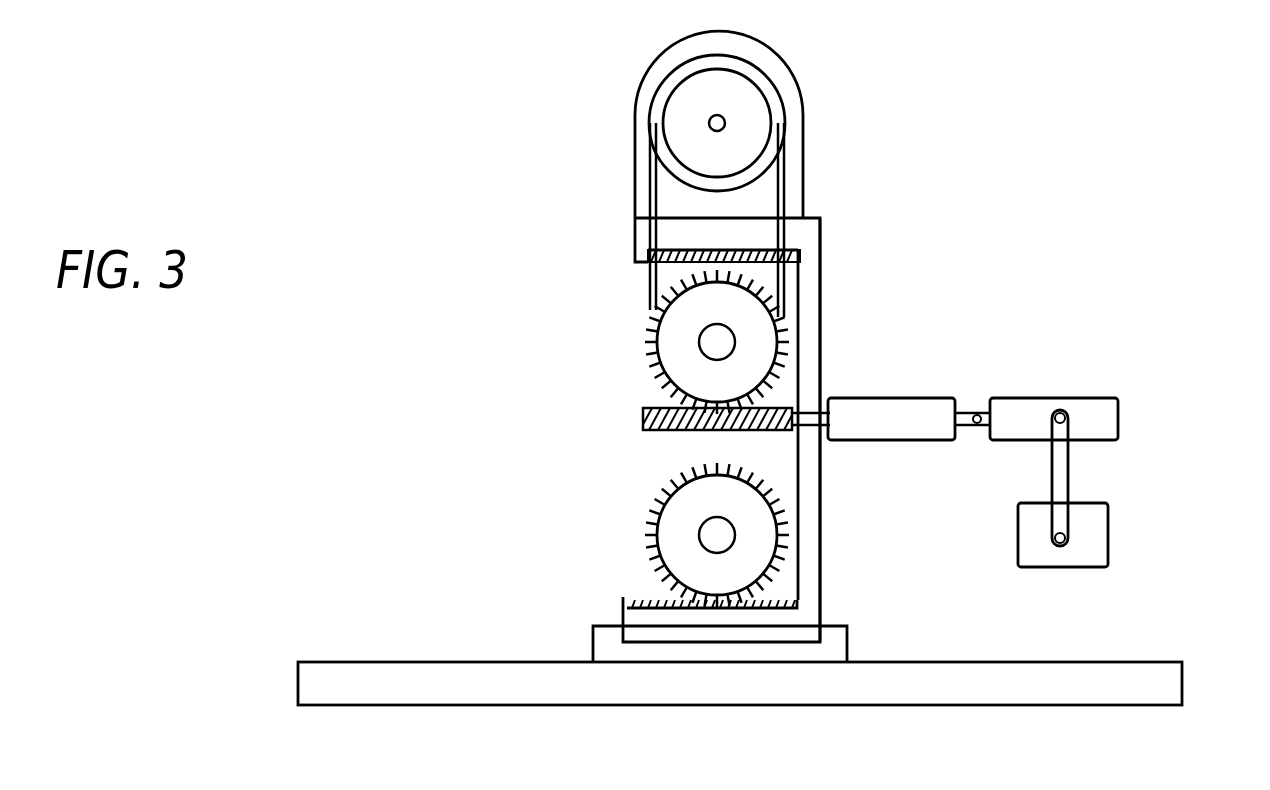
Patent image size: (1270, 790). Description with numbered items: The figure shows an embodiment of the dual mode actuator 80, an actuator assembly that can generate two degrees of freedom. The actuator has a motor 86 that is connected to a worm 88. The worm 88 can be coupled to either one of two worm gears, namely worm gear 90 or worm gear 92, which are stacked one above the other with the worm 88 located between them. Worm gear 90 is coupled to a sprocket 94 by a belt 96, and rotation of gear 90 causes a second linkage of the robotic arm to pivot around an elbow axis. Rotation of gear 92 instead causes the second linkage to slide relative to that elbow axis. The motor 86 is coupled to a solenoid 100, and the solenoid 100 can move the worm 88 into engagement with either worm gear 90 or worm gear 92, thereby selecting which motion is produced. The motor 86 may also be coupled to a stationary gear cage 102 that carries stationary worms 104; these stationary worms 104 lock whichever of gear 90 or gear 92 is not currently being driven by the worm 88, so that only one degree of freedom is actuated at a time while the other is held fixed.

The dual mode actuator 80 is at (860, 230).
The motor 86 is at (889, 397).
The worm 88 is at (648, 431).
The worm gear 90 is at (690, 355).
The worm gear 92 is at (680, 551).
The sprocket 94 is at (695, 94).
The belt 96 is at (651, 196).
The solenoid 100 is at (1107, 531).
The stationary gear cage 102 is at (820, 321).
The stationary worms 104 is at (645, 233).